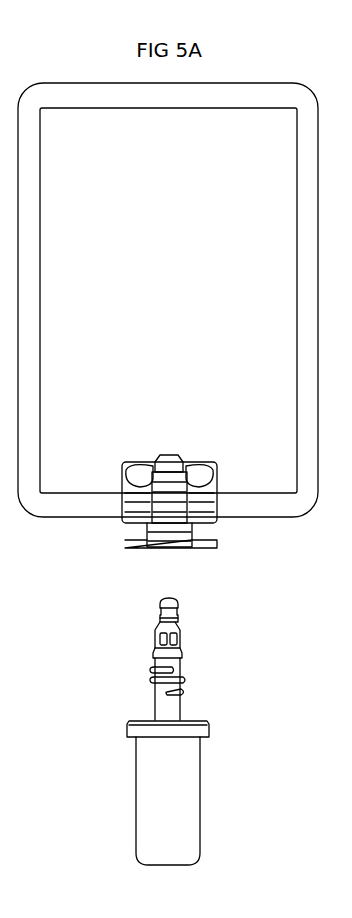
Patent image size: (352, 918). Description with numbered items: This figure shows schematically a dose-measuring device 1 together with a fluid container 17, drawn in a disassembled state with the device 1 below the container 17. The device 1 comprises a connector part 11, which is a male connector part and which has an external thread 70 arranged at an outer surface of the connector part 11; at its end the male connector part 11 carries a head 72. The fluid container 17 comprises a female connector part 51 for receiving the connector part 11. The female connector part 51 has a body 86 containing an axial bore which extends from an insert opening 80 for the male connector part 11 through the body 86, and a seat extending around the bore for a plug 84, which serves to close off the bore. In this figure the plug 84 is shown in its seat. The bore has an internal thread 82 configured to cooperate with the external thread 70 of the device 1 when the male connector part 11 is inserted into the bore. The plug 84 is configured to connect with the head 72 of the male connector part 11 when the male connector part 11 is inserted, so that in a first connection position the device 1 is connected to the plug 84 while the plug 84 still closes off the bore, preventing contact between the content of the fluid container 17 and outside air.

The dose-measuring device 1 is at (199, 731).
The connector part 11 is at (160, 707).
The fluid container 17 is at (292, 507).
The female connector part 51 is at (127, 543).
The external thread 70 is at (177, 682).
The head 72 is at (172, 615).
The insert opening 80 is at (141, 490).
The internal thread 82 is at (173, 546).
The plug 84 is at (167, 457).
The body 86 is at (210, 482).